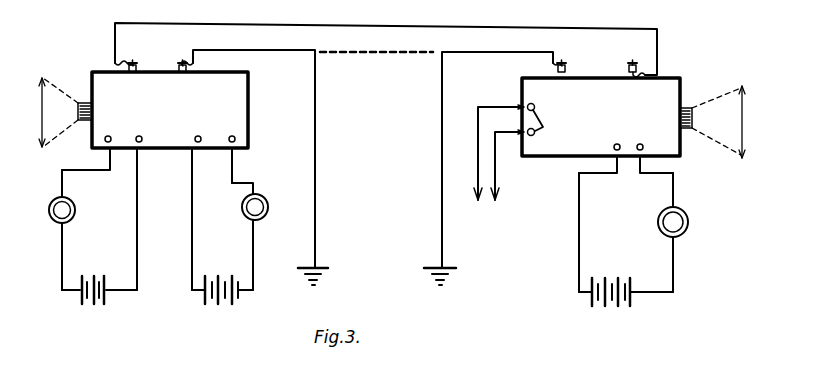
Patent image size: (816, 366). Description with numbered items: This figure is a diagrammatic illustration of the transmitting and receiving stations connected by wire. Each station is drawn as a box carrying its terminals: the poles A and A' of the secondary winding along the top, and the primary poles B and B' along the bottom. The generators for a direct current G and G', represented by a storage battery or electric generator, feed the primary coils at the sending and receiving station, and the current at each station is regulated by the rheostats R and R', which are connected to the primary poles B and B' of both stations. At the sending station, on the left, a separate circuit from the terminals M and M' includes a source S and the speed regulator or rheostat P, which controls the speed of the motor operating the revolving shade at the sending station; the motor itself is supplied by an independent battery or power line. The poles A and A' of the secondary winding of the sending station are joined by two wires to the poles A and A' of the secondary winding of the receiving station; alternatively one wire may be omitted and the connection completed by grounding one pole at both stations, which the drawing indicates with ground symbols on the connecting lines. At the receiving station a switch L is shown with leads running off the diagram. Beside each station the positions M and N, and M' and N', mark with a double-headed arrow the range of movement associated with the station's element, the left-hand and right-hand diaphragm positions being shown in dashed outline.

The pole of the secondary winding A is at (352, 167).
The pole of the secondary winding A' is at (386, 63).
The primary pole B is at (402, 201).
The primary pole B' is at (446, 148).
The microphone terminal / diaphragm position M is at (88, 141).
The microphone terminal / diaphragm position M' is at (139, 201).
The diaphragm position N is at (62, 113).
The diaphragm position N' is at (718, 123).
The switch L is at (514, 152).
The speed regulator or rheostat P is at (53, 223).
The rheostat R is at (257, 236).
The rheostat R' is at (682, 232).
The battery S is at (99, 308).
The generator for a direct current G is at (222, 307).
The generator for a direct current G' is at (626, 259).